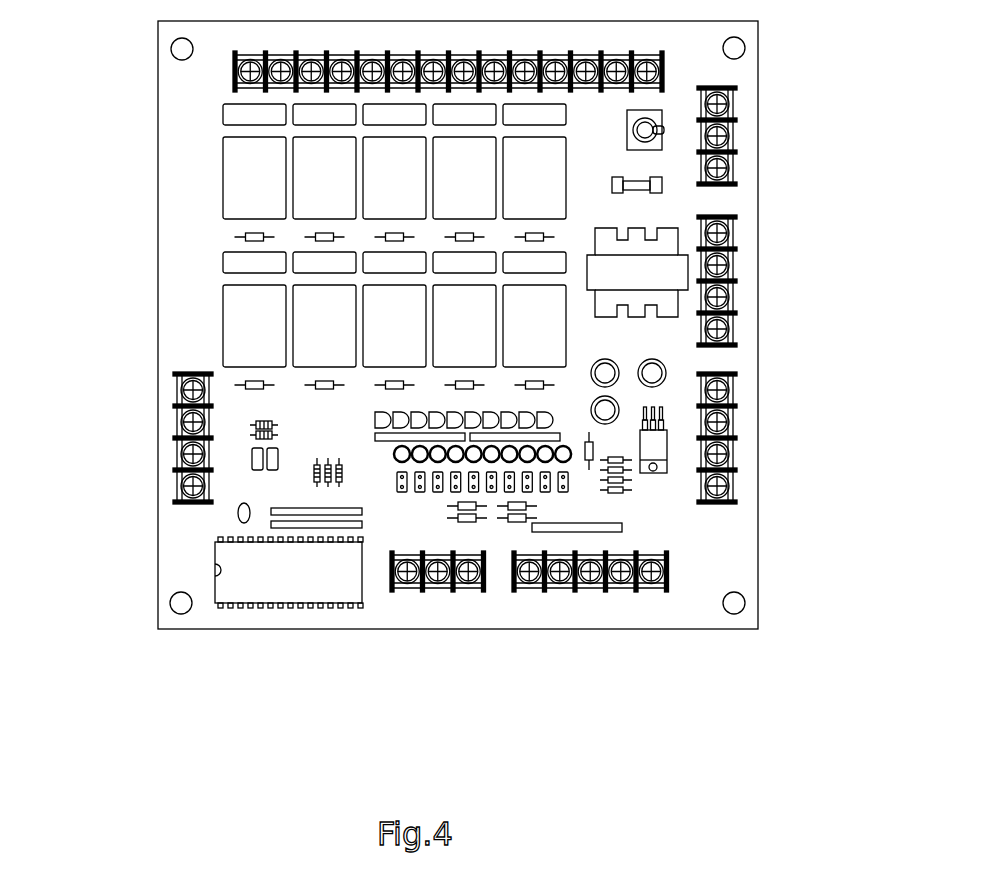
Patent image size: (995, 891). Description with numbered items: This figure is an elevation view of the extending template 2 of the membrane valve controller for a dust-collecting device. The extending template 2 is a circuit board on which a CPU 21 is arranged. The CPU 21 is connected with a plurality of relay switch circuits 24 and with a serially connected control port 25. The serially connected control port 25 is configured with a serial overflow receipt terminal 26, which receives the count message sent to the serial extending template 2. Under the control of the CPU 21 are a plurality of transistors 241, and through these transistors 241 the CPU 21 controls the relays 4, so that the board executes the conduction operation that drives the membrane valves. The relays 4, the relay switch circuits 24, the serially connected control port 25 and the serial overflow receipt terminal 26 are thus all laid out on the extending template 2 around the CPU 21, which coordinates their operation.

The extending template 2 is at (177, 320).
The relay 4 is at (247, 172).
The CPU 21 is at (238, 568).
The relay switch circuit 24 is at (727, 280).
The transistor 241 is at (553, 415).
The serially connected control port 25 is at (733, 455).
The serial overflow receipt terminal 26 is at (728, 150).